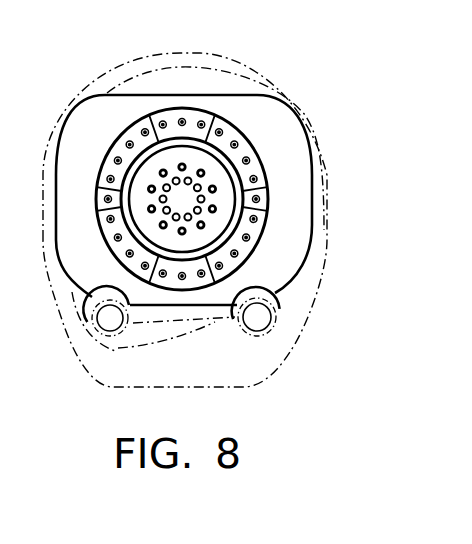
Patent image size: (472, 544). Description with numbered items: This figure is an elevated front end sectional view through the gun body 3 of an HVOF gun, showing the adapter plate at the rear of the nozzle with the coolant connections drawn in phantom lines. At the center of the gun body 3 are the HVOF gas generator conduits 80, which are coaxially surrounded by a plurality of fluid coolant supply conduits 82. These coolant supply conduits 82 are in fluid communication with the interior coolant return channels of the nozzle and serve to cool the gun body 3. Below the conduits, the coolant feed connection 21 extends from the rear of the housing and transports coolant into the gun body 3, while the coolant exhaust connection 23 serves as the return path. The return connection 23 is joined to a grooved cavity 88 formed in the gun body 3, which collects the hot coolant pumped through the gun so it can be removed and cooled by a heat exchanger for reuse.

The gun body 3 is at (280, 249).
The coolant feed connection 21 is at (258, 319).
The coolant exhaust connection 23 is at (110, 318).
The HVOF gas generator conduits 80 is at (215, 208).
The fluid coolant supply conduits 82 is at (248, 159).
The grooved cavity 88 is at (145, 335).